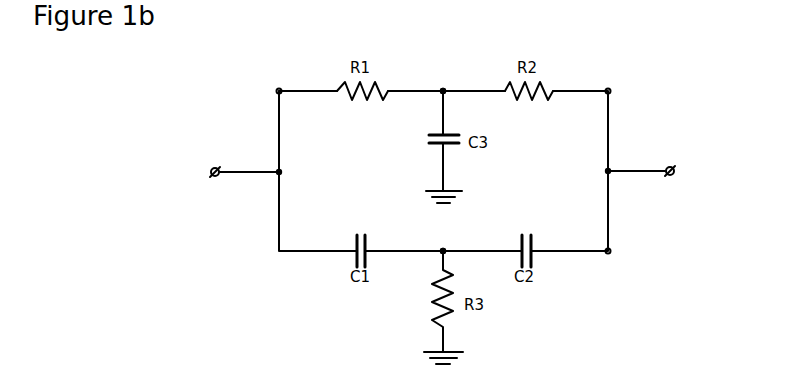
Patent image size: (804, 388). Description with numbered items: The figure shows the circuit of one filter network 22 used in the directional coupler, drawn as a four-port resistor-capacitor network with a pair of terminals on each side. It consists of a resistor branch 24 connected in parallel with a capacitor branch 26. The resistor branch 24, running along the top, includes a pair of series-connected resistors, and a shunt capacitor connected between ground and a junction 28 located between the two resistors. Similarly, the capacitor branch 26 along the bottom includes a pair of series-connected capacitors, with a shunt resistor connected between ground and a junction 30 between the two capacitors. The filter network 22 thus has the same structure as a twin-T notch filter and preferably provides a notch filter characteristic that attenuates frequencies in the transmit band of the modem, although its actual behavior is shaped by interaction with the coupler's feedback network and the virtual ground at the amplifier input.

The filter network 22 is at (267, 80).
The resistor branch 24 is at (623, 82).
The capacitor branch 26 is at (617, 259).
The junction 28 is at (444, 90).
The junction 30 is at (444, 250).